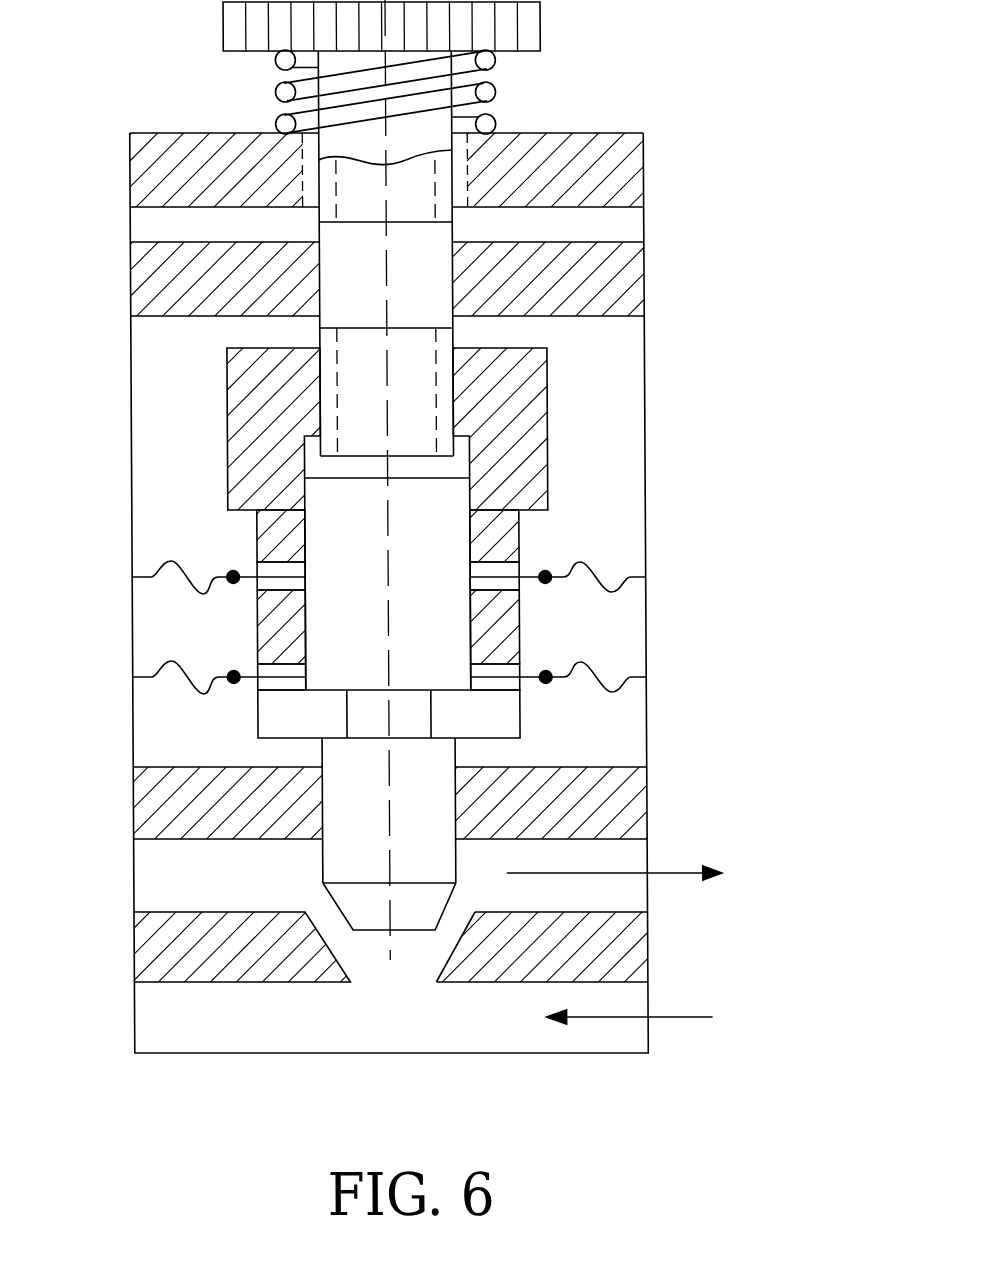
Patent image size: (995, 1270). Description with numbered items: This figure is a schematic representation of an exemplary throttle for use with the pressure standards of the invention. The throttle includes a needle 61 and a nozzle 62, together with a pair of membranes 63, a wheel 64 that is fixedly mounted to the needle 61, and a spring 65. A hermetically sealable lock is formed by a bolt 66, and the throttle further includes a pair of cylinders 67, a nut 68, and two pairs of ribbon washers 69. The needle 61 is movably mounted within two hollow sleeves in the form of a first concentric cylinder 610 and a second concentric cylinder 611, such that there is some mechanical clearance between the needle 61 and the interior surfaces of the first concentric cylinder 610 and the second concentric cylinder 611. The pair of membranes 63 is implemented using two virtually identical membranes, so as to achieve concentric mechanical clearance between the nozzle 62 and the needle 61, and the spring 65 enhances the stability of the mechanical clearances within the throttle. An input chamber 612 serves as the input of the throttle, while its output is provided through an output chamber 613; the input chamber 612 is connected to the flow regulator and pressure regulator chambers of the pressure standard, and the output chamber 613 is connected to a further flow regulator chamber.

The needle 61 is at (368, 910).
The nozzle 62 is at (178, 938).
The pair of membranes 63 is at (230, 577).
The wheel 64 is at (541, 33).
The spring 65 is at (276, 91).
The bolt 66 is at (505, 713).
The pair of cylinders 67 is at (494, 537).
The nut 68 is at (248, 452).
The ribbon washers 69 is at (254, 556).
The first concentric cylinder 610 is at (368, 833).
The second concentric cylinder 611 is at (412, 257).
The input chamber 612 is at (664, 1013).
The output chamber 613 is at (660, 870).